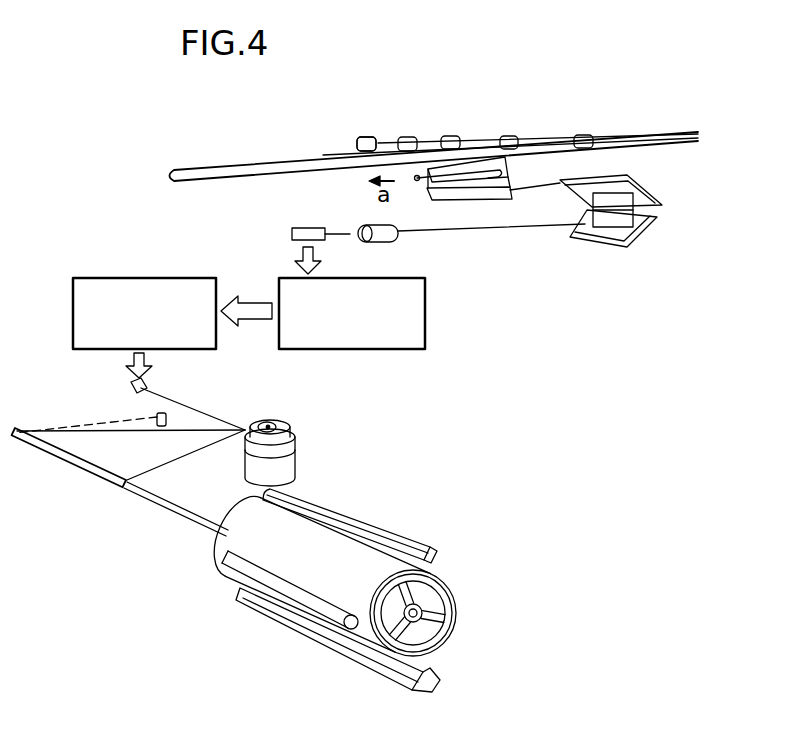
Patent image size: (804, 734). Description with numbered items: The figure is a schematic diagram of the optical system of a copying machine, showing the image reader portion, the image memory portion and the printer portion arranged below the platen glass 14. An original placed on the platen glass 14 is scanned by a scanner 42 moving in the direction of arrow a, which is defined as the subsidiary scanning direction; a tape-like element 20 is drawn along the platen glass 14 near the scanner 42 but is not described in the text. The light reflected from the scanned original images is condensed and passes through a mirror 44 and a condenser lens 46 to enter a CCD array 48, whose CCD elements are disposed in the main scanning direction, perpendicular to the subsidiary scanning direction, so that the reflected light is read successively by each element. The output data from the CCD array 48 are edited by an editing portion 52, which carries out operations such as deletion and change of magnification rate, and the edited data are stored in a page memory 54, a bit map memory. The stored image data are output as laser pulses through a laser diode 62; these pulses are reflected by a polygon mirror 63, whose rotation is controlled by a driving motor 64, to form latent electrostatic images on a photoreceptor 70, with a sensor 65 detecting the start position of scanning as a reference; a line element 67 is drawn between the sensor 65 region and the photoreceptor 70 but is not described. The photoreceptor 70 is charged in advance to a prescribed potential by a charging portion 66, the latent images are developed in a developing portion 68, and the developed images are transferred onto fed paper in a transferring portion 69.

The platen glass 14 is at (255, 162).
The key 20 is at (358, 151).
The scanner 42 is at (424, 180).
The mirror 44 is at (618, 258).
The condenser lens 46 is at (395, 240).
The CCD array 48 is at (290, 234).
The editing portion 52 is at (428, 313).
The page memory 54 is at (120, 277).
The laser diode 62 is at (148, 385).
The polygon mirror 63 is at (289, 424).
The driving motor 64 is at (294, 462).
The sensor 65 is at (155, 417).
The charging portion 66 is at (410, 538).
The plate 67 is at (128, 483).
The developing portion 68 is at (220, 571).
The transferring portion 69 is at (315, 638).
The photoreceptor 70 is at (463, 630).